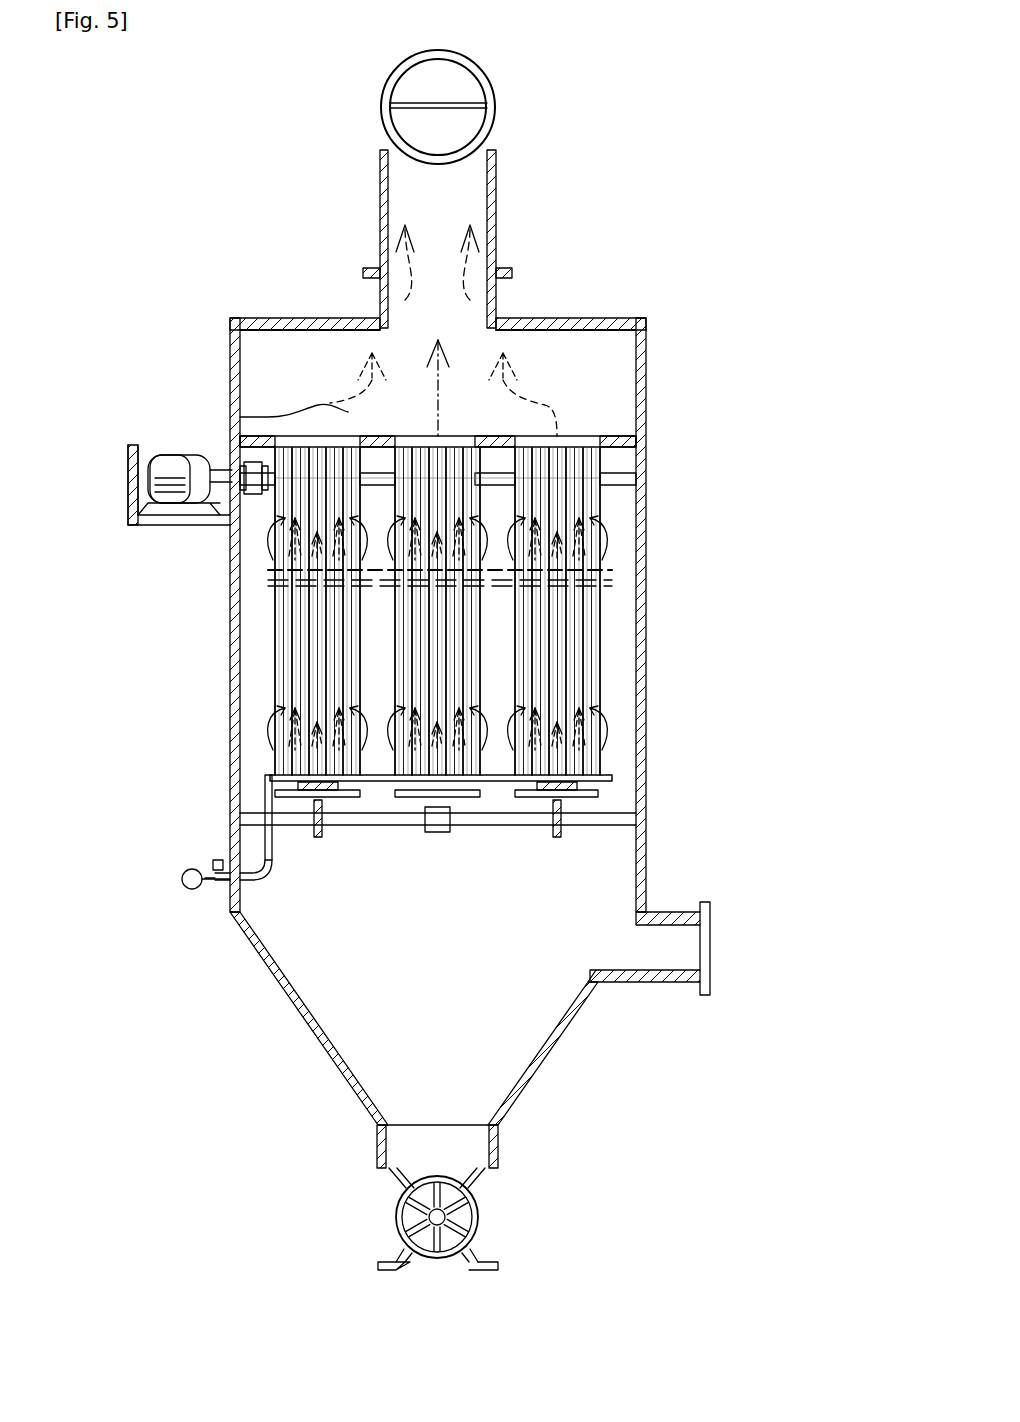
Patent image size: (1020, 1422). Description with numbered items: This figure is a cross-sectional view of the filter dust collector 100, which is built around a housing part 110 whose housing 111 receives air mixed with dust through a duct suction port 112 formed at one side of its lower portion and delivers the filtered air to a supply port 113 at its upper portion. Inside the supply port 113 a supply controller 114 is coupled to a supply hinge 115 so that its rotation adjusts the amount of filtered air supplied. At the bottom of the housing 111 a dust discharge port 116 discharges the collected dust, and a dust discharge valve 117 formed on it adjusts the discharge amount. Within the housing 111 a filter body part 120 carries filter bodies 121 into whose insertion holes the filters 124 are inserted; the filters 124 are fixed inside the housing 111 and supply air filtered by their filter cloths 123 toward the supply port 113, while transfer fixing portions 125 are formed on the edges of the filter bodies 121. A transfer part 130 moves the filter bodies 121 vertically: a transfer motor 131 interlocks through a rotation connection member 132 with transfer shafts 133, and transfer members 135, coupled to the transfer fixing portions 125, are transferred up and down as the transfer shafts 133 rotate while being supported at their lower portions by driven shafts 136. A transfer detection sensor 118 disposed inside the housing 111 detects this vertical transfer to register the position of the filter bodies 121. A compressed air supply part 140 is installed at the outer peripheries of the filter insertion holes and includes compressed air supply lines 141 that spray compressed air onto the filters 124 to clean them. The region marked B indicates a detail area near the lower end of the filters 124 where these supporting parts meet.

The filter dust collector 100 is at (146, 143).
The housing part 110 is at (229, 318).
The housing 111 is at (276, 318).
The duct suction port 112 is at (640, 983).
The supply port 113 is at (497, 158).
The supply controller 114 is at (384, 130).
The supply hinge 115 is at (462, 104).
The dust discharge port 116 is at (499, 1140).
The dust discharge valve 117 is at (479, 1217).
The transfer detection sensor 118 is at (433, 832).
The filter body part 120 is at (590, 805).
The filter bodies 121 is at (612, 779).
The filter cloths 123 is at (590, 655).
The filters 124 is at (585, 437).
The transfer fixing portions 125 is at (538, 793).
The transfer part 130 is at (128, 445).
The transfer motor 131 is at (170, 468).
The rotation connection member 132 is at (258, 496).
The transfer shafts 133 is at (240, 417).
The transfer members 135 is at (312, 817).
The driven shafts 136 is at (353, 818).
The compressed air supply part 140 is at (255, 754).
The compressed air supply lines 141 is at (268, 782).
The detail region B is at (625, 748).